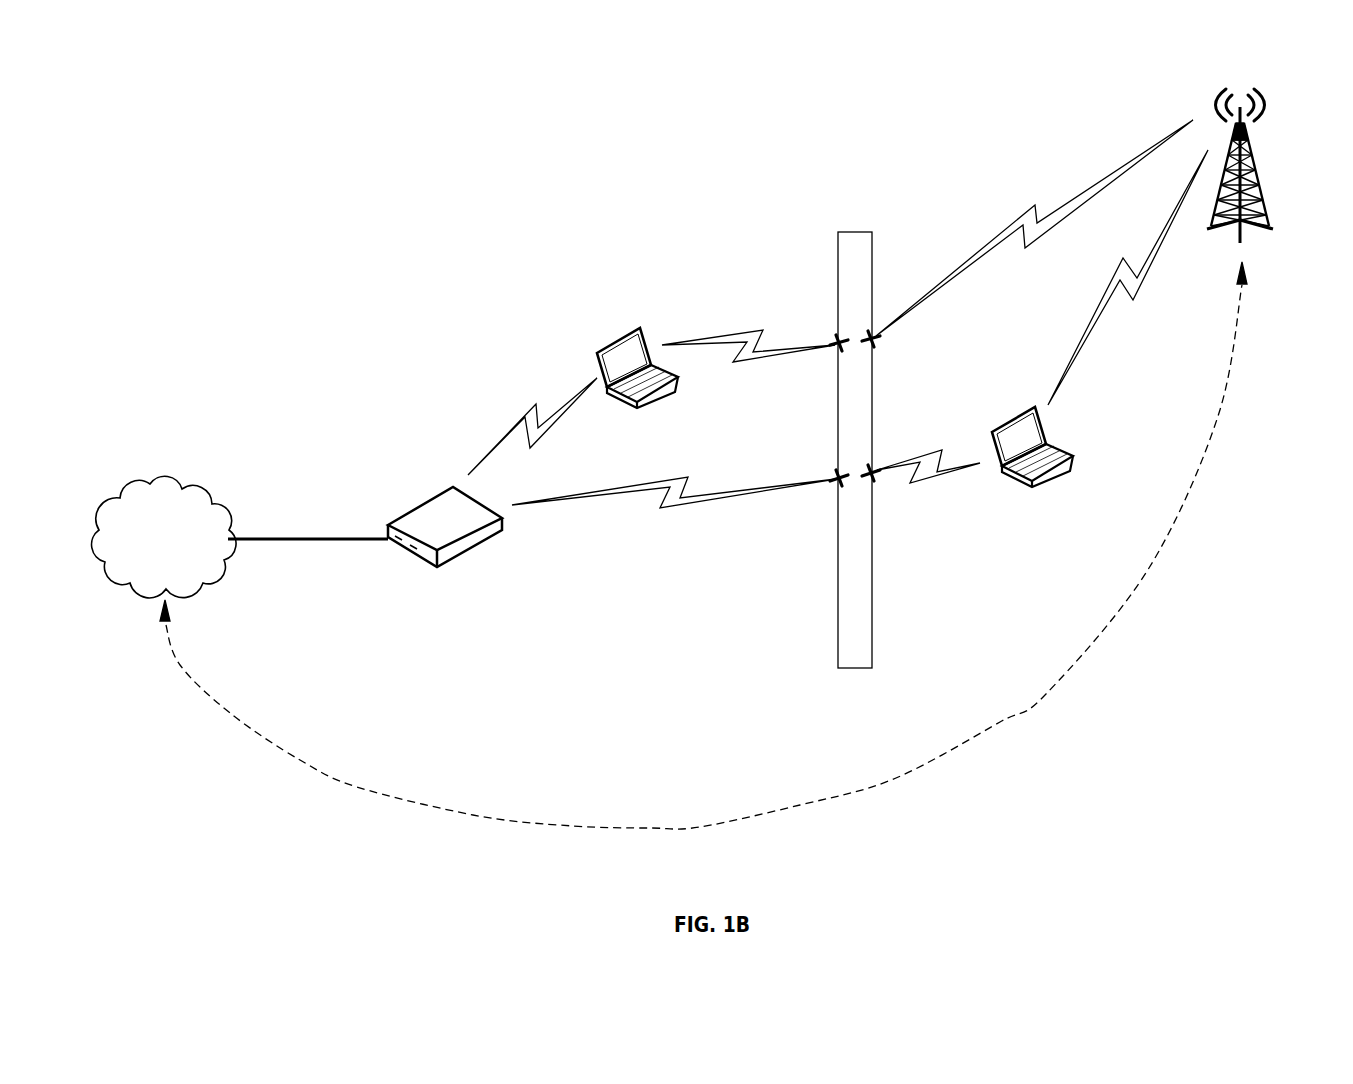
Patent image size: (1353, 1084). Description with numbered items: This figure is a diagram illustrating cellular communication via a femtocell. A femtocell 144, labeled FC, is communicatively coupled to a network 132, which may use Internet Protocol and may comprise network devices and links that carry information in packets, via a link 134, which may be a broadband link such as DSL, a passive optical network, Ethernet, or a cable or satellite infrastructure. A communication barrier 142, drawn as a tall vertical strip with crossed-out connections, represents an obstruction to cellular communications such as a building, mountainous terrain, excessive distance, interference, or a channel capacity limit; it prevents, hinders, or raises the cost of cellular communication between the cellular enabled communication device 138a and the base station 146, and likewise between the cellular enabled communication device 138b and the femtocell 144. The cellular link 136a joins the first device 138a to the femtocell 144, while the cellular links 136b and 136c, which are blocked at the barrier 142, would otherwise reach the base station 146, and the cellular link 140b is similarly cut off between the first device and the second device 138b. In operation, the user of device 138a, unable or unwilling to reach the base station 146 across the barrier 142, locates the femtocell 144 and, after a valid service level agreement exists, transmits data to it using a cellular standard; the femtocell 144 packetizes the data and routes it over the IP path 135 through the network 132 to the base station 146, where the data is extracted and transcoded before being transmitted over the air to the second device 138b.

The network 132 is at (150, 484).
The link 134 is at (323, 538).
The IP connection 135 is at (648, 827).
The cellular link 136a is at (522, 417).
The cellular link 136b is at (1154, 393).
The cellular link 136c is at (998, 233).
The cellular enabled communication device 138a is at (630, 408).
The cellular enabled communication device 138b is at (1046, 482).
The cellular link 140b is at (677, 502).
The communication barrier 142 is at (838, 232).
The femtocell 144 is at (425, 502).
The base station 146 is at (1250, 155).